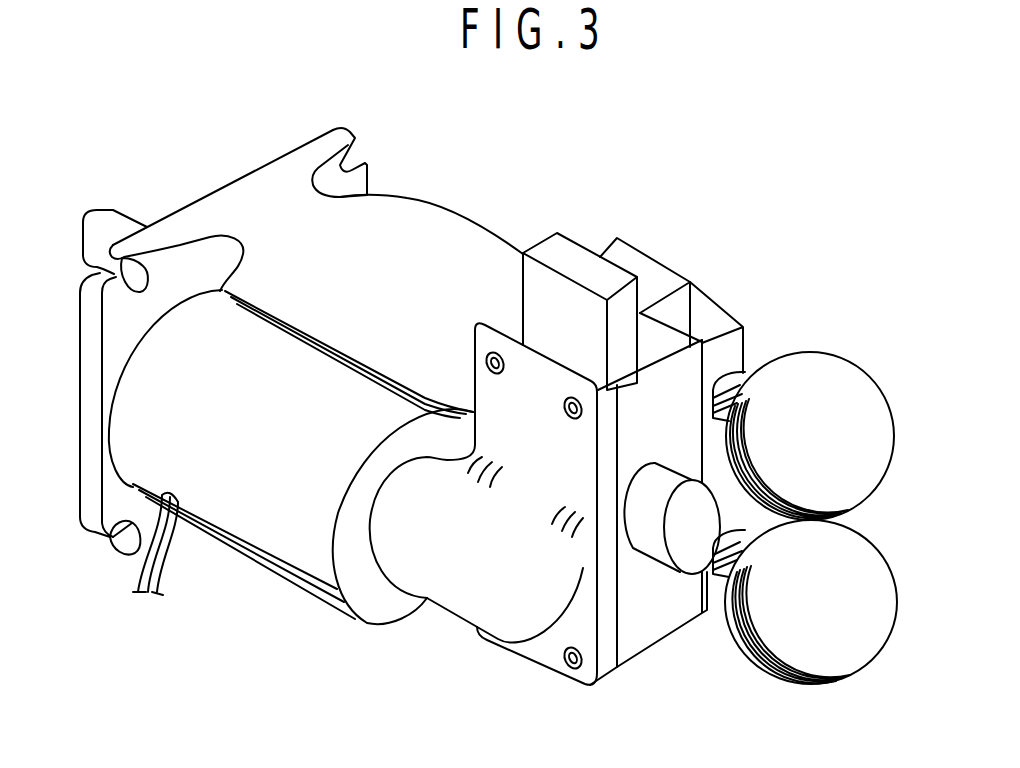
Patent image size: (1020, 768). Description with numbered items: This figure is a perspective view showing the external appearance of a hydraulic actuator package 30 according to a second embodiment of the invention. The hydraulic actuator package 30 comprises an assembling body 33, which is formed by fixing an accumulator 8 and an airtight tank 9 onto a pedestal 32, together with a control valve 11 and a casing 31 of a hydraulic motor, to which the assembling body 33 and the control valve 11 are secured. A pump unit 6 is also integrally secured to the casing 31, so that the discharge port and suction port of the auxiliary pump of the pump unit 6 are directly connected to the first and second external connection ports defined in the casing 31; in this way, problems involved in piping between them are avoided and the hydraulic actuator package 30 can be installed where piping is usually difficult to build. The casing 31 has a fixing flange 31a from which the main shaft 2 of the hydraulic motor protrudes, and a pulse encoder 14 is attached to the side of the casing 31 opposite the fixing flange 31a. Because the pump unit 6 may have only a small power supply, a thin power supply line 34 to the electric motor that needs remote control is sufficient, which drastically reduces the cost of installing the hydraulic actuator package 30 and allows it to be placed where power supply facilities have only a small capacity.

The main shaft 2 is at (117, 222).
The pump unit 6 is at (276, 578).
The accumulator 8 is at (846, 352).
The airtight tank 9 is at (838, 683).
The control valve 11 is at (660, 250).
The pulse encoder 14 is at (687, 557).
The hydraulic actuator package 30 is at (420, 635).
The casing 31 is at (502, 228).
The fixing flange 31a is at (320, 148).
The pedestal 32 is at (710, 317).
The assembling body 33 is at (757, 321).
The power supply line 34 is at (141, 572).